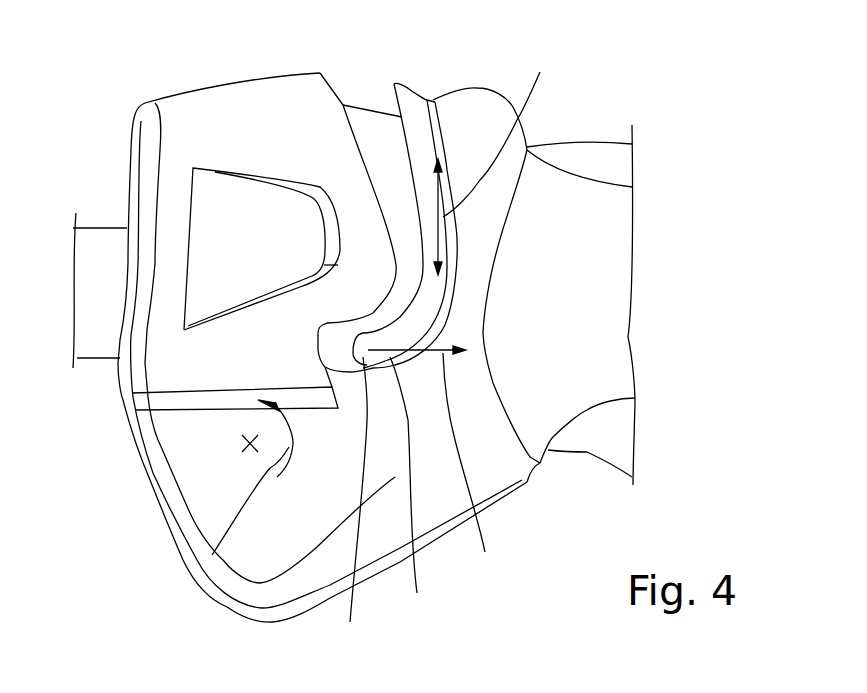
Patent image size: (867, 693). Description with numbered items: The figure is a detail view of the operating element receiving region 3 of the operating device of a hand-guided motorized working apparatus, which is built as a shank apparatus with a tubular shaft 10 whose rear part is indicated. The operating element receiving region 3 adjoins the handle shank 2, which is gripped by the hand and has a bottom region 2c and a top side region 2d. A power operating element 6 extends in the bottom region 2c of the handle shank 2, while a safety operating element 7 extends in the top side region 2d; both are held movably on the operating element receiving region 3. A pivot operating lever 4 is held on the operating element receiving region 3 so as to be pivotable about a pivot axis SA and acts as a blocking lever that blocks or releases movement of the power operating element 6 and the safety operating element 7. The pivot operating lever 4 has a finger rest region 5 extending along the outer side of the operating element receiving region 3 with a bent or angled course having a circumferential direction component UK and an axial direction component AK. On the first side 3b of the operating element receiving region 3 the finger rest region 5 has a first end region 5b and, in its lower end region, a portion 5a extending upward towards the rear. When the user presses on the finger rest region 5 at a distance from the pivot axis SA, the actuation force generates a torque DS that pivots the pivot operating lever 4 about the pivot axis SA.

The handle shank 2 is at (613, 203).
The bottom region of the handle shank 2c is at (608, 385).
The top side region of the handle shank 2d is at (613, 180).
The operating element receiving region 3 is at (200, 466).
The first side of the operating element receiving region 3b is at (198, 363).
The pivot operating lever 4 is at (373, 128).
The finger rest region 5 is at (410, 100).
The portion extending upward towards the rear 5a is at (412, 491).
The first end region of the finger rest region 5b is at (348, 508).
The power operating element 6 is at (592, 442).
The safety operating element 7 is at (591, 158).
The tubular shaft 10 is at (103, 237).
The pivot axis SA is at (250, 448).
The torque DS is at (493, 383).
The circumferential direction component UK is at (508, 128).
The axial direction component AK is at (469, 472).